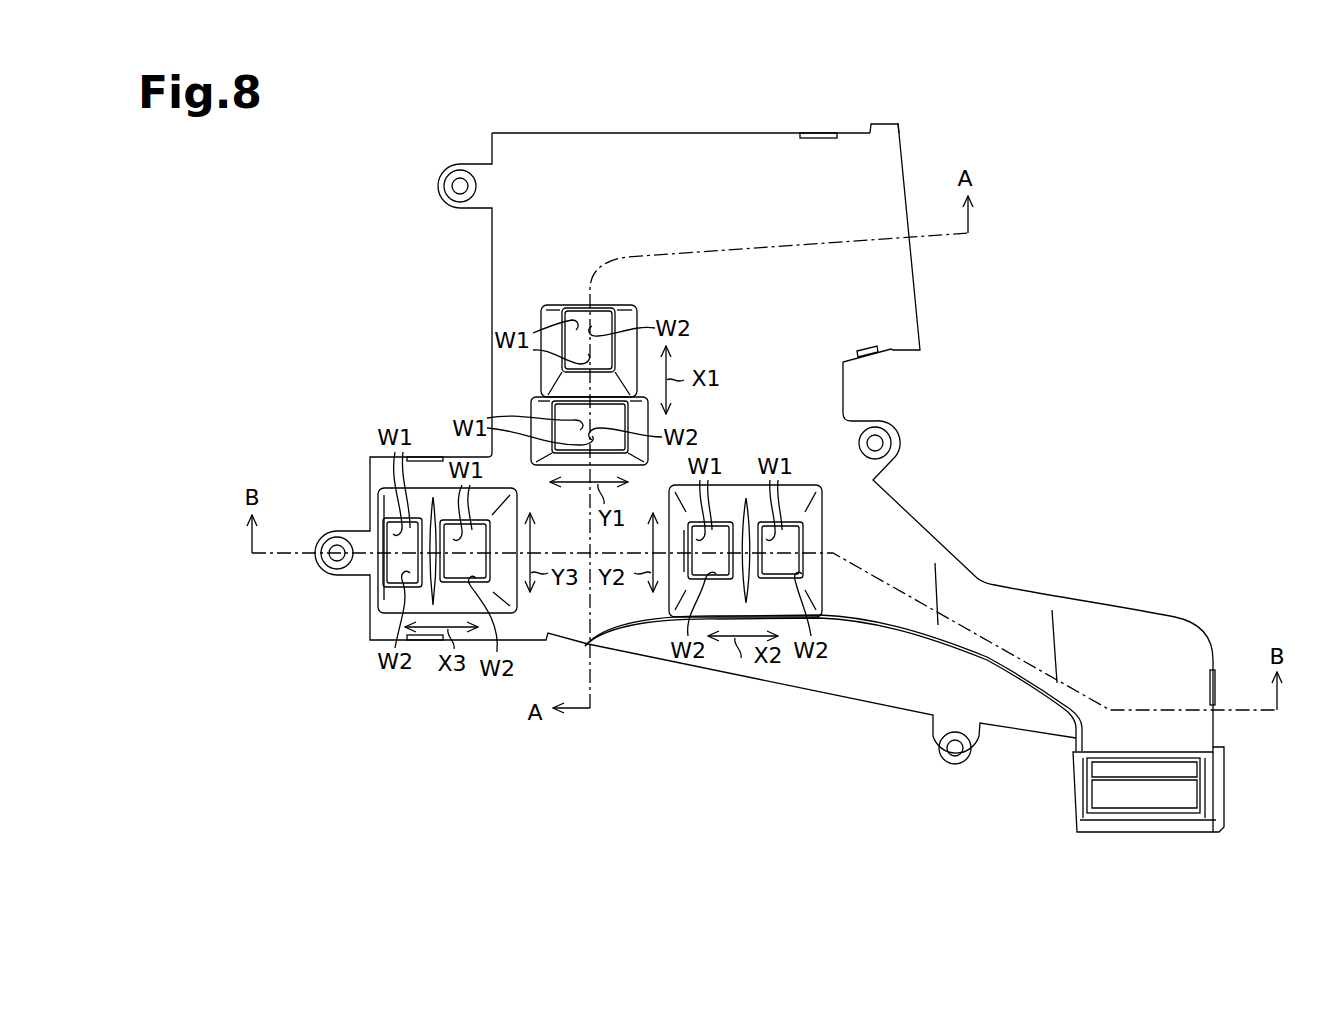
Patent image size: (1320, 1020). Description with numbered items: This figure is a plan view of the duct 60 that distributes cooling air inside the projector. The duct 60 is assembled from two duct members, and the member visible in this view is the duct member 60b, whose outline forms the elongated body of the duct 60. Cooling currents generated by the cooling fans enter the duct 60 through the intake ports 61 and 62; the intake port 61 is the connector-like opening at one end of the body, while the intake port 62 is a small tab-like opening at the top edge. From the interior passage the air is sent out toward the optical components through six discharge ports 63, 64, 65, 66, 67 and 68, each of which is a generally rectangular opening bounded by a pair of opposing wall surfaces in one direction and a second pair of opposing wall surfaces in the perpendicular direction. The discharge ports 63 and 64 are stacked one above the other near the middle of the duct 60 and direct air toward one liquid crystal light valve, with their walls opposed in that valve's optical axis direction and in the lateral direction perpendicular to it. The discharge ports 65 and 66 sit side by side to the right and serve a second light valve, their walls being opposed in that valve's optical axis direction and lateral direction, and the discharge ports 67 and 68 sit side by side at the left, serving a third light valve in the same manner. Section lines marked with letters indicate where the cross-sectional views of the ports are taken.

The duct 60 is at (1189, 208).
The duct member 60b is at (666, 133).
The intake port 61 is at (1227, 800).
The intake port 62 is at (885, 119).
The discharge port 63 is at (543, 302).
The discharge port 64 is at (529, 400).
The discharge port 65 is at (808, 482).
The discharge port 66 is at (727, 482).
The discharge port 67 is at (376, 488).
The discharge port 68 is at (445, 485).